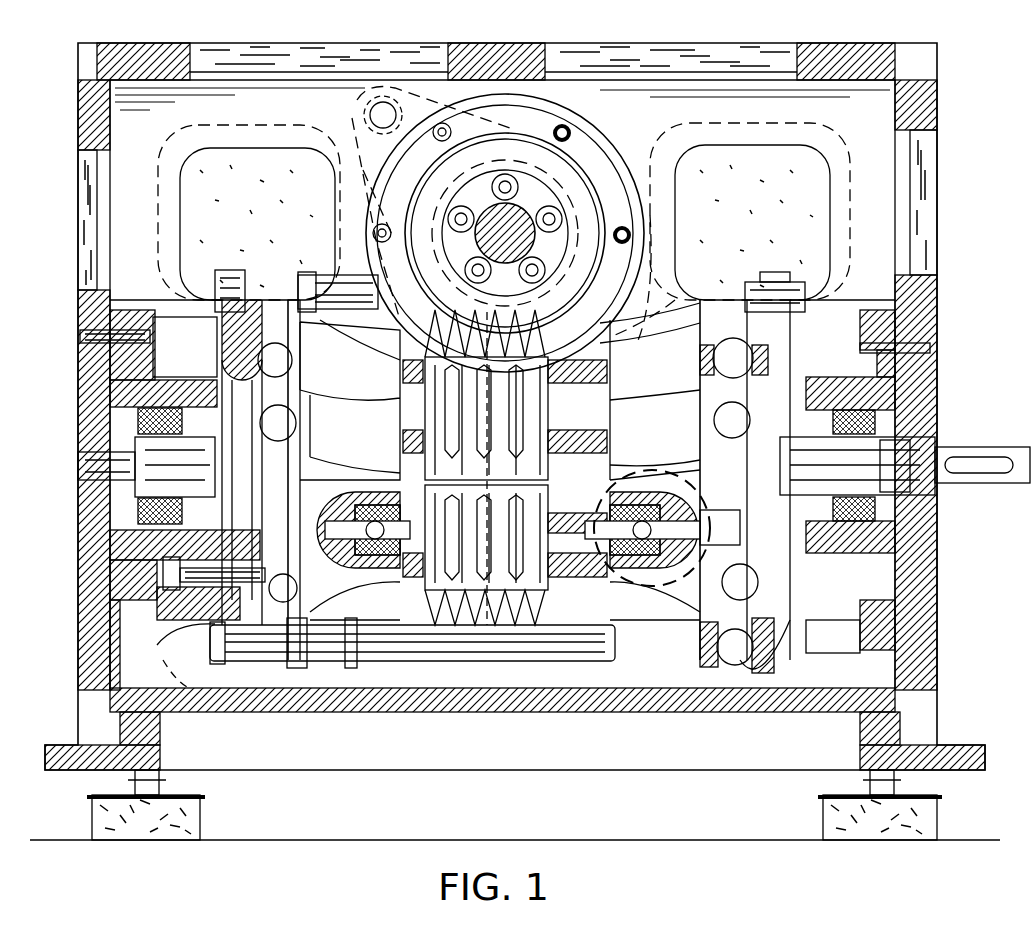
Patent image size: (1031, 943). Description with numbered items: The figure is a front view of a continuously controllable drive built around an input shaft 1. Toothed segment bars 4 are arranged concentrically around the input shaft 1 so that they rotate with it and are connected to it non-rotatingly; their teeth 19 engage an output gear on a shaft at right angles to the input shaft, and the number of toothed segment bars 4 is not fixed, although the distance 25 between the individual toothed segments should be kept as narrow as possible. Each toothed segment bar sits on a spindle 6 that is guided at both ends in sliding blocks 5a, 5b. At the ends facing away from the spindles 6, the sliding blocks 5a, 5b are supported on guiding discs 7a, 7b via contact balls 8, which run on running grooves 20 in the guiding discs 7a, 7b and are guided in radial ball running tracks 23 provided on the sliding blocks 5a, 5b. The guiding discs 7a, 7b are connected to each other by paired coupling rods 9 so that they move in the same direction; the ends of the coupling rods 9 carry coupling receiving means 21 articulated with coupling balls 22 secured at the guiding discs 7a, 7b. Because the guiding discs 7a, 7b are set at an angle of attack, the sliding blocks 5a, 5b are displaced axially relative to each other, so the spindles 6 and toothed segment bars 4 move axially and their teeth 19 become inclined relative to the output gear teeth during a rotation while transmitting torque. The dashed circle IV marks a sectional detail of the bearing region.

The input shaft 1 is at (147, 452).
The toothed segment bars 4 is at (570, 317).
The sliding block 5a is at (712, 600).
The sliding block 5b is at (345, 560).
The spindles 6 is at (625, 585).
The guiding disc 7a is at (913, 530).
The guiding disc 7b is at (215, 512).
The contact balls 8 is at (742, 592).
The coupling rods 9 is at (513, 653).
The teeth 19 is at (437, 600).
The running grooves 20 is at (763, 610).
The coupling receiving means 21 is at (225, 305).
The coupling balls 22 is at (245, 292).
The radial ball running tracks 23 is at (292, 603).
The distance 25 is at (393, 357).
The section indicator IV is at (655, 590).